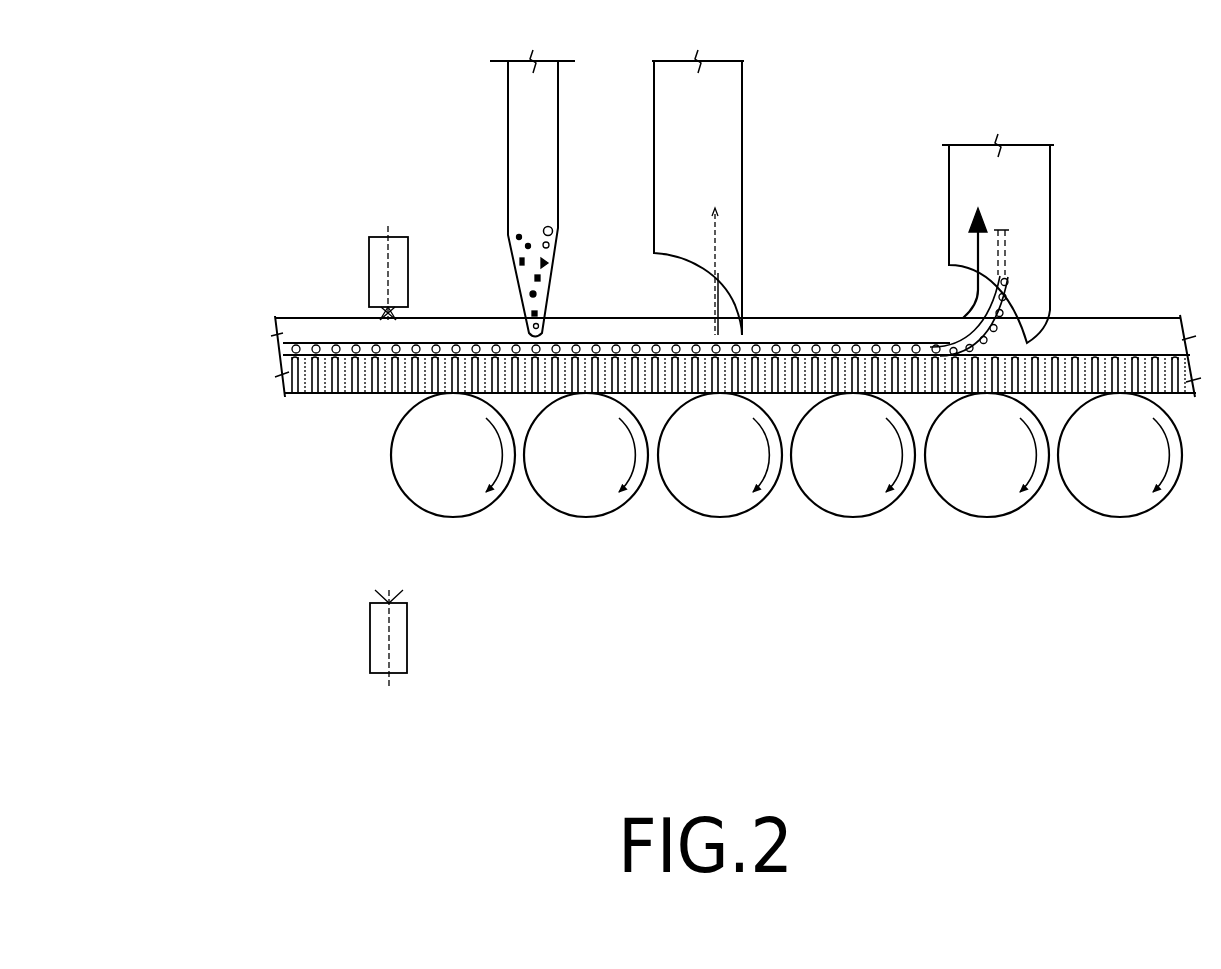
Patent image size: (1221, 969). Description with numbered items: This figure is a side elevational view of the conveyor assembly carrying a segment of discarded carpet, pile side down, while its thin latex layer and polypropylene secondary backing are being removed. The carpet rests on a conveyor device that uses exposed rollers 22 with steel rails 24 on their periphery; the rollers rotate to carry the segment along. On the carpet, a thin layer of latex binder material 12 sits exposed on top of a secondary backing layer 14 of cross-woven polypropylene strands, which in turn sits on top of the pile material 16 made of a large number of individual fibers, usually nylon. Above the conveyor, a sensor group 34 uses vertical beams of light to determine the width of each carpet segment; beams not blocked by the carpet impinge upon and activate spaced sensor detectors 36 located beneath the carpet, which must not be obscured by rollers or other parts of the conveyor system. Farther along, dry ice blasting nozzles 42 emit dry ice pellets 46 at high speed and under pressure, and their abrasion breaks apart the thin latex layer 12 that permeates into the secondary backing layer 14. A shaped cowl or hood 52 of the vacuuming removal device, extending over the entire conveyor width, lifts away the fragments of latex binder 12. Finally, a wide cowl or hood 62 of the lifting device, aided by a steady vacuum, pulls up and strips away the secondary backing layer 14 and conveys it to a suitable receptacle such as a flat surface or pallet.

The latex binder layer 12 is at (711, 336).
The secondary backing layer 14 is at (941, 336).
The pile material 16 is at (372, 396).
The exposed rollers 22 is at (457, 520).
The steel rails 24 is at (782, 316).
The sensor group 34 is at (368, 272).
The sensor detectors 36 is at (368, 639).
The dry ice blasting nozzles 42 is at (507, 141).
The dry ice pellets 46 is at (510, 238).
The cowl or hood 52 is at (745, 118).
The cowl or hood 62 is at (1053, 224).